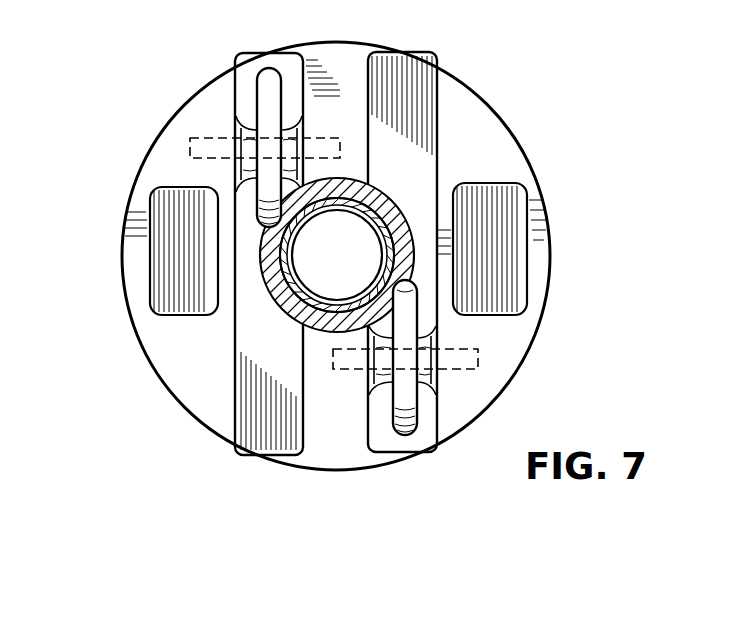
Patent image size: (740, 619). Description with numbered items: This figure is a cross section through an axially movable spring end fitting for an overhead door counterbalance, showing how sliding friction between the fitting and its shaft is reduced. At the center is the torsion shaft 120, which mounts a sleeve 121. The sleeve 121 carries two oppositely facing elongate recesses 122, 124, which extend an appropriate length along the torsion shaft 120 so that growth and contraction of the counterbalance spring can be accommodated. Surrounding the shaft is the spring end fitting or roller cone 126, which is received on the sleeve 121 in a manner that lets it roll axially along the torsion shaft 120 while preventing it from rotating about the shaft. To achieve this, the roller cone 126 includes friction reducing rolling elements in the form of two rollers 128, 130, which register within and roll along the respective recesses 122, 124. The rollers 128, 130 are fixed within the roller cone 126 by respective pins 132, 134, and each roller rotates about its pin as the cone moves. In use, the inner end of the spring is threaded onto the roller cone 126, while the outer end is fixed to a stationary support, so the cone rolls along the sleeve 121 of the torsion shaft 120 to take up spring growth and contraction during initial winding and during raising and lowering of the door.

The torsion shaft 120 is at (293, 247).
The sleeve 121 is at (274, 300).
The recess 122 is at (360, 186).
The recess 124 is at (345, 320).
The roller cone 126 is at (117, 283).
The roller 128 is at (268, 76).
The roller 130 is at (407, 438).
The pin 132 is at (188, 147).
The pin 134 is at (478, 359).